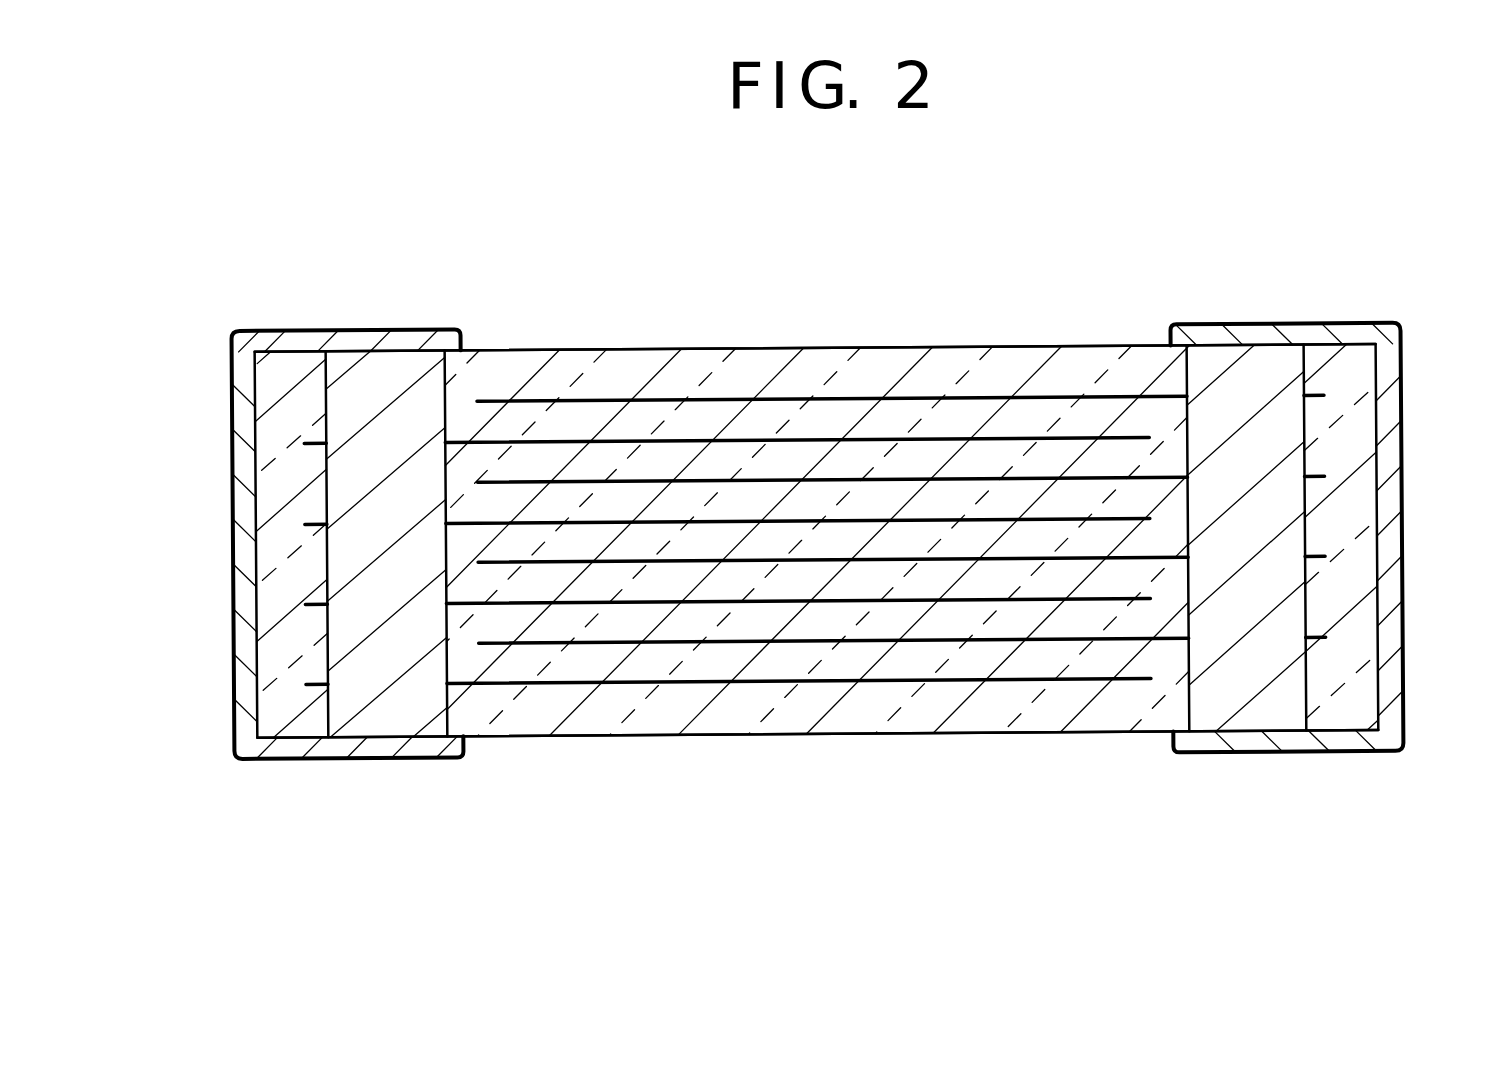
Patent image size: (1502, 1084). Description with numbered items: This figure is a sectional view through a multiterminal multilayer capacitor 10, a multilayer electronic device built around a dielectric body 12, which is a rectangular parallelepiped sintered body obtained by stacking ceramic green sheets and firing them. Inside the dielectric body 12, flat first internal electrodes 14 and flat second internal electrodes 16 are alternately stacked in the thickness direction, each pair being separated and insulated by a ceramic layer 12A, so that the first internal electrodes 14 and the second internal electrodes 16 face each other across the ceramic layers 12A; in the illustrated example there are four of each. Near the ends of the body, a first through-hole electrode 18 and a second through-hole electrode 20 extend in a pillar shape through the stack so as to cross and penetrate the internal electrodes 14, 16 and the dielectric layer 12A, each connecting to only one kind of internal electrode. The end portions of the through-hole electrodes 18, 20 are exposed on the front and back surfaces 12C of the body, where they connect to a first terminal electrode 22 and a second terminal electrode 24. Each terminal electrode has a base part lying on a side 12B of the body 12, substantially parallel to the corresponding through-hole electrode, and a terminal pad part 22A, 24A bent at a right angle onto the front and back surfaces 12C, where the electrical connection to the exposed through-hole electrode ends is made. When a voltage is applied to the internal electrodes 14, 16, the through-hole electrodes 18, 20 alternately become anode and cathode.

The multiterminal multilayer capacitor 10 is at (1137, 296).
The dielectric body 12 is at (945, 360).
The ceramic layers 12A is at (853, 520).
The sides 12B is at (1378, 415).
The front and back surfaces 12C is at (657, 348).
The first internal electrodes 14 is at (1003, 478).
The second internal electrodes 16 is at (488, 520).
The first through-hole electrode 18 is at (1282, 376).
The second through-hole electrode 20 is at (405, 372).
The first terminal electrode 22 is at (1390, 481).
The terminal pad part 22A is at (1243, 333).
The second terminal electrode 24 is at (243, 489).
The terminal pad part 24A is at (330, 338).